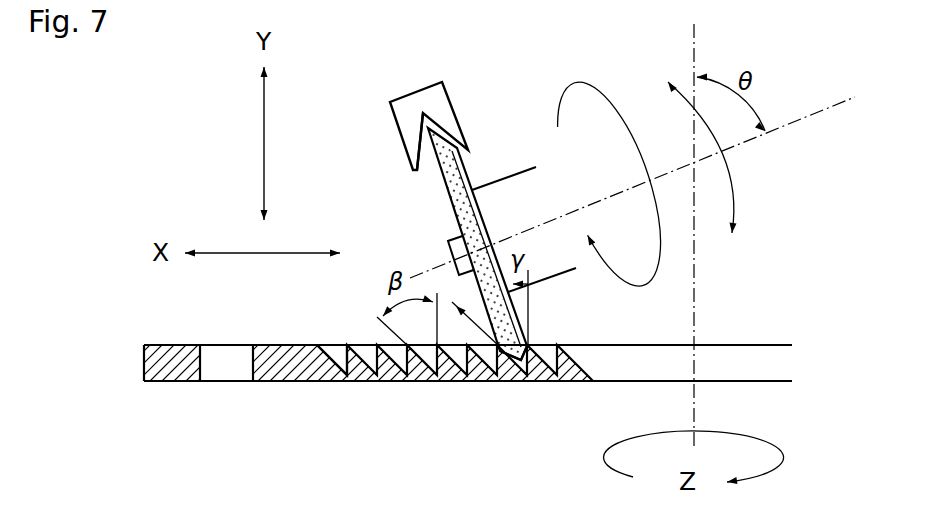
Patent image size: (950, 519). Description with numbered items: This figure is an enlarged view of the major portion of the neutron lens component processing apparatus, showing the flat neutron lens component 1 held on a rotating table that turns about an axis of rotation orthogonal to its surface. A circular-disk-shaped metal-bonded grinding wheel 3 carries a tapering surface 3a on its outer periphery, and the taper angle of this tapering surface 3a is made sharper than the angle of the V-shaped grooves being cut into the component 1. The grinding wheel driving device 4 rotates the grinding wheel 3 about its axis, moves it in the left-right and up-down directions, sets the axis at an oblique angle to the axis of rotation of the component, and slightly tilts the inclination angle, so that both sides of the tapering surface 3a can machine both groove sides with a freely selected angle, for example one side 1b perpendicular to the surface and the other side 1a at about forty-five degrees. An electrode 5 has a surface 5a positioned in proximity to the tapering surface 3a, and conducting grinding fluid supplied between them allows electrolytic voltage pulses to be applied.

The neutron lens component 1 is at (290, 372).
The groove side at about forty-five degrees 1a is at (327, 345).
The groove side perpendicular to the surface 1b is at (347, 353).
The circular-disk-shaped metal-bonded grinding wheel 3 is at (456, 215).
The tapering surface 3a is at (532, 356).
The grinding wheel driving device 4 is at (520, 193).
The electrode 5 is at (428, 105).
The electrode surface 5a is at (430, 178).